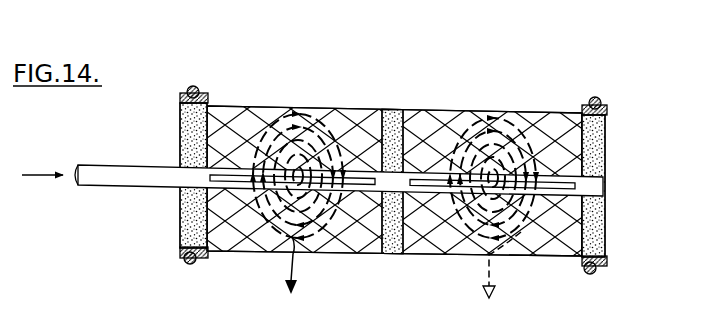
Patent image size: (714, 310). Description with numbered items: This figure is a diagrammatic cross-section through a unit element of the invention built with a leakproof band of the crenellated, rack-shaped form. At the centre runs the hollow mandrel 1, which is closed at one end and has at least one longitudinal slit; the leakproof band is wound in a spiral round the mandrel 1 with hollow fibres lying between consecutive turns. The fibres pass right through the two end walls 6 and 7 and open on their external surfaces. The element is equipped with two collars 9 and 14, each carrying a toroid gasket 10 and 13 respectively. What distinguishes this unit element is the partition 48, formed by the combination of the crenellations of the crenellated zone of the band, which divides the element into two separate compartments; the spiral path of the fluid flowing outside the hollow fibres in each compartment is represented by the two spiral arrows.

The hollow mandrel 1 is at (143, 176).
The end wall 6 is at (186, 127).
The end wall 7 is at (612, 137).
The collar 9 is at (213, 98).
The toroid gasket 10 is at (197, 86).
The toroid gasket 13 is at (590, 96).
The collar 14 is at (580, 107).
The partition 48 is at (393, 110).